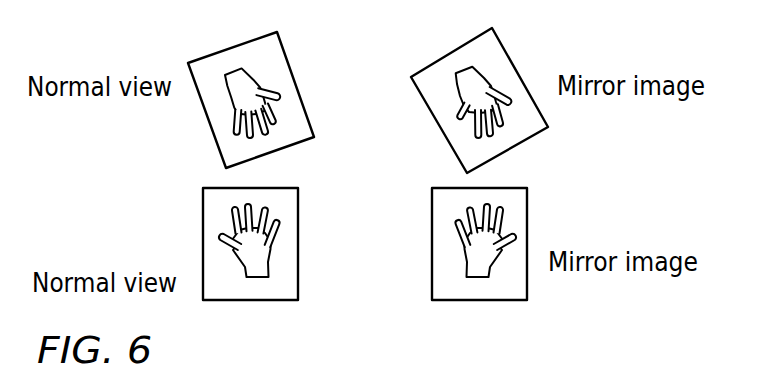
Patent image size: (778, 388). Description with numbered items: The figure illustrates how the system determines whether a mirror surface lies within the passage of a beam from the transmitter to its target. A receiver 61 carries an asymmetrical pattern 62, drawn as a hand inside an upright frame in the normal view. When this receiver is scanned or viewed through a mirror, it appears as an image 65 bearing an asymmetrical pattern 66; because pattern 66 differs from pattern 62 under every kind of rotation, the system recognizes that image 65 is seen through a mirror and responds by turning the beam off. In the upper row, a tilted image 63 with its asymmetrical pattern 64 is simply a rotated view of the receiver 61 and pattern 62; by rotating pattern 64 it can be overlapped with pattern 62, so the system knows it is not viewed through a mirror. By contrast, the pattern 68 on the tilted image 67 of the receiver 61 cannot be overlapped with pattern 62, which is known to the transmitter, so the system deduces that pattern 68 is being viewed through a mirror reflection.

The receiver 61 is at (300, 202).
The asymmetrical pattern 62 is at (227, 242).
The image 63 is at (213, 143).
The asymmetrical pattern 64 is at (235, 70).
The image 65 is at (527, 202).
The asymmetrical pattern 66 is at (470, 258).
The image 67 is at (507, 38).
The pattern 68 is at (460, 72).